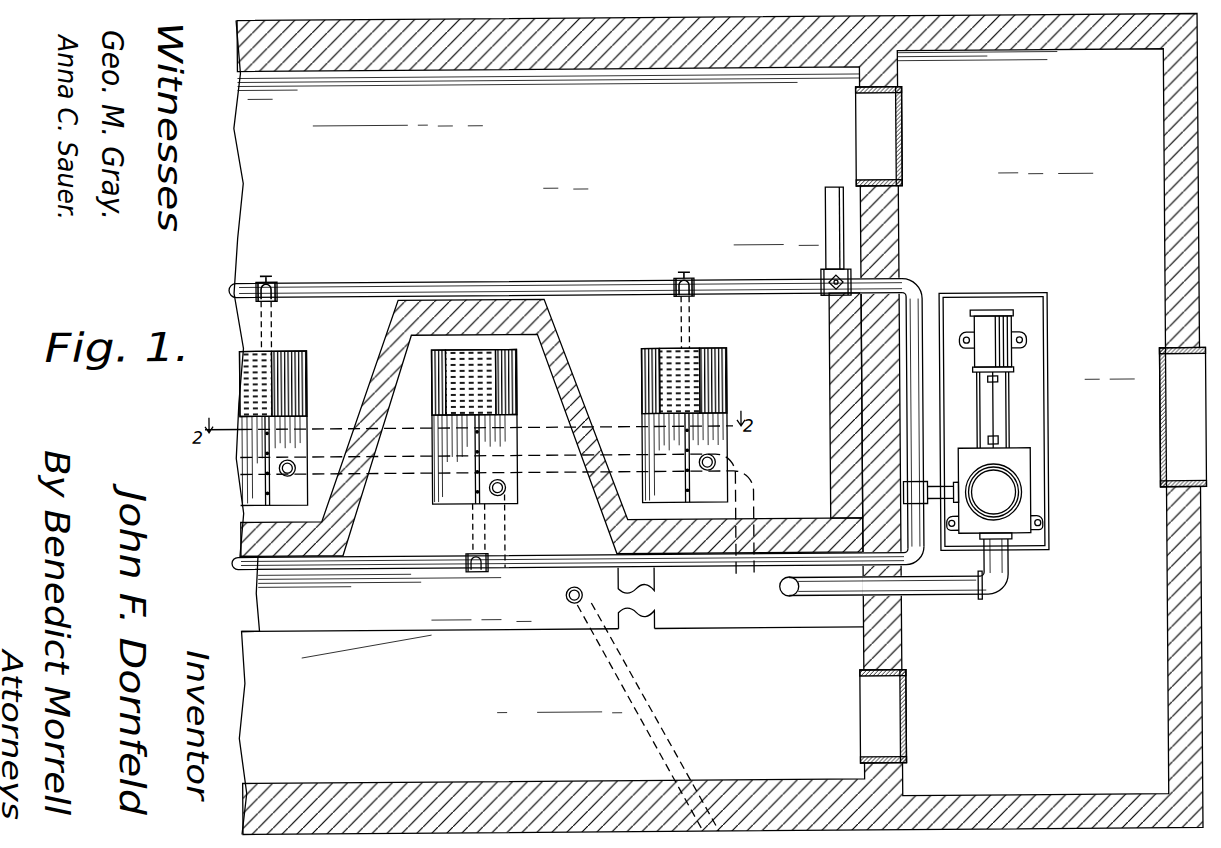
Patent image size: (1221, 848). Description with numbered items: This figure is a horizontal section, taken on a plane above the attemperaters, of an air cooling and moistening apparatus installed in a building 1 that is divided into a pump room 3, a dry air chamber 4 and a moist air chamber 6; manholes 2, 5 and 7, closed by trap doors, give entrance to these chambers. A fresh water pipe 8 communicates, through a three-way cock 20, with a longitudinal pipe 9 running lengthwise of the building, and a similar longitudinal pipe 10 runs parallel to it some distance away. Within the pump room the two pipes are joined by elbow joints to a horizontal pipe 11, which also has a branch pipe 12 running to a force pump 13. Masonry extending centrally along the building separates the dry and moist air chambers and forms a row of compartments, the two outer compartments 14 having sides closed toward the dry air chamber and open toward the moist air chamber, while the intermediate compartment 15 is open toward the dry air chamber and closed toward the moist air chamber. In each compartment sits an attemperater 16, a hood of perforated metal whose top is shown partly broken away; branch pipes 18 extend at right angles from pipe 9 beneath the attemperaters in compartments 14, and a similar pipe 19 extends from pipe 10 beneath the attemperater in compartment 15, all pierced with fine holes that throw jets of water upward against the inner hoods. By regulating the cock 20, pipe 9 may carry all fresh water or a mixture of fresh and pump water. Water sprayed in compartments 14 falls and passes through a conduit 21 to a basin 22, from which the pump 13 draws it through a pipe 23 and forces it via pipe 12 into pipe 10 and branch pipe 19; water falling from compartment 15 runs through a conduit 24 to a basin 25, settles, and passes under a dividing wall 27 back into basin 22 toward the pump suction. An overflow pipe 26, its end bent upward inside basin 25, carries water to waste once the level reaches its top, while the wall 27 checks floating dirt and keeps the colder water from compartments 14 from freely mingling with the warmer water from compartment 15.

The building 1 is at (1170, 668).
The manhole 2 is at (1182, 416).
The pump room 3 is at (1016, 333).
The dry air chamber 4 is at (462, 674).
The manhole 5 is at (883, 716).
The moist air chamber 6 is at (548, 162).
The manhole 7 is at (879, 136).
The fresh water pipe 8 is at (827, 216).
The longitudinal pipe 9 is at (633, 280).
The longitudinal pipe 10 is at (430, 570).
The horizontal pipe 11 is at (923, 364).
The branch pipe 12 is at (926, 483).
The force pump 13 is at (994, 422).
The compartment 14 is at (560, 333).
The intermediate compartment 15 is at (551, 427).
The attemperater 16 is at (307, 382).
The branch pipe 18 is at (270, 457).
The branch pipe 19 is at (480, 448).
The three-way cock 20 is at (822, 278).
The conduit 21 is at (295, 462).
The basin 22 is at (552, 601).
The pipe 23 is at (946, 597).
The conduit 24 is at (505, 487).
The basin 25 is at (543, 598).
The overflow pipe 26 is at (612, 668).
The dividing wall 27 is at (656, 626).